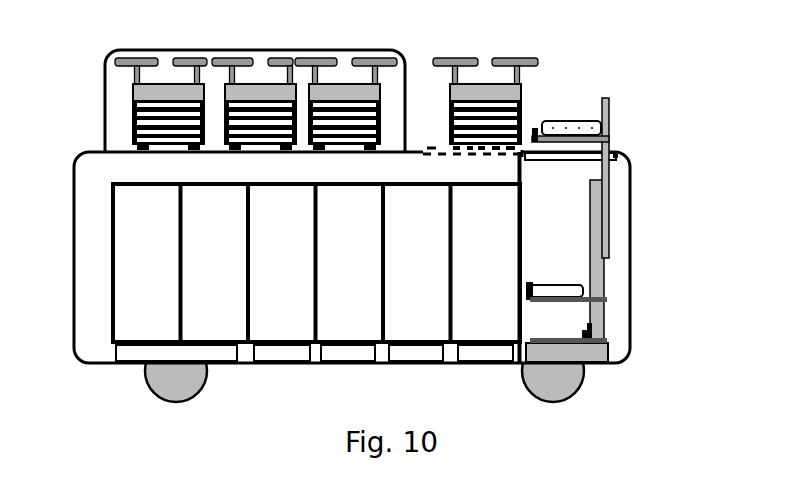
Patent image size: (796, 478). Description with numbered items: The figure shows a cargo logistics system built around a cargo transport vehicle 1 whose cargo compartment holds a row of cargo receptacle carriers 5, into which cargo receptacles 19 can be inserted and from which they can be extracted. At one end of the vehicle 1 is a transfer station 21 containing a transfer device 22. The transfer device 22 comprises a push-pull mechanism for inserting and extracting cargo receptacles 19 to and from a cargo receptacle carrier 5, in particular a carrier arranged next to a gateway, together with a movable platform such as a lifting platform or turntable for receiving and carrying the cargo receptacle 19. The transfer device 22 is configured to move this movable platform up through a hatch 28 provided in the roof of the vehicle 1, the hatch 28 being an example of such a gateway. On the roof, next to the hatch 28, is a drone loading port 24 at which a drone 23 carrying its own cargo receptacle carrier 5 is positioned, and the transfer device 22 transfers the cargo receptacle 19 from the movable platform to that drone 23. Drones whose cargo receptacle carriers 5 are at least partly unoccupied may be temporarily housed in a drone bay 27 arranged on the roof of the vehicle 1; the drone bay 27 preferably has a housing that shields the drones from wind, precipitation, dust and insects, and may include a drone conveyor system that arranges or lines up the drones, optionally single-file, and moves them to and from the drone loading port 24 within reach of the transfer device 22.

The cargo transport vehicle 1 is at (65, 256).
The cargo receptacle carrier 5 is at (140, 133).
The cargo receptacle 19 is at (590, 126).
The transfer station 21 is at (631, 258).
The transfer device 22 is at (603, 299).
The drone 23 is at (538, 100).
The drone loading port 24 is at (438, 147).
The drone bay 27 is at (107, 80).
The hatch 28 is at (616, 156).